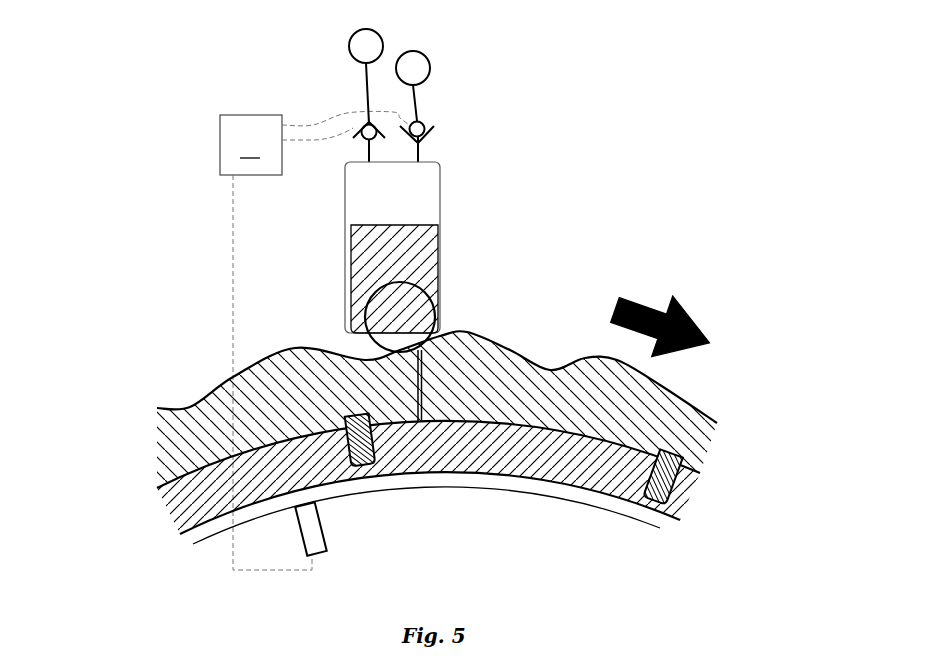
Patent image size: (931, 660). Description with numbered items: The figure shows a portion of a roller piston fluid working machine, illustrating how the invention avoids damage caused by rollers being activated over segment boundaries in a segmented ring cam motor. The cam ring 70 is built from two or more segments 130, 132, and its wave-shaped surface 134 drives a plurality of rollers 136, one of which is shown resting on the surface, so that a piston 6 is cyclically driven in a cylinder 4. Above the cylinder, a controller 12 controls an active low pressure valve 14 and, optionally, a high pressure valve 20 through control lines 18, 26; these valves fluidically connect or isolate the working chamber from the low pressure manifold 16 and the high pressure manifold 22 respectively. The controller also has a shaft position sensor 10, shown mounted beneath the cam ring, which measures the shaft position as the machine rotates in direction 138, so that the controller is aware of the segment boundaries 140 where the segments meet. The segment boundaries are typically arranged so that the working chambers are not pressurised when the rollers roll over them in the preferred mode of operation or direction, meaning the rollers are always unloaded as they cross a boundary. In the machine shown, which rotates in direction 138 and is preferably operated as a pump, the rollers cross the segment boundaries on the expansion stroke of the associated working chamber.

The cylinder 4 is at (447, 197).
The piston 6 is at (420, 263).
The shaft position sensor 10 is at (315, 525).
The controller 12 is at (251, 145).
The active low pressure valve 14 is at (357, 120).
The low pressure manifold 16 is at (362, 42).
The control line 18 is at (353, 127).
The high pressure valve 20 is at (423, 122).
The high pressure manifold 22 is at (417, 69).
The control line 26 is at (308, 122).
The cam ring 70 is at (715, 410).
The segment 130 is at (172, 428).
The segment 132 is at (690, 460).
The wave-shaped surface 134 is at (217, 390).
The roller 136 is at (377, 347).
The direction of rotation 138 is at (637, 297).
The segment boundary 140 is at (427, 360).